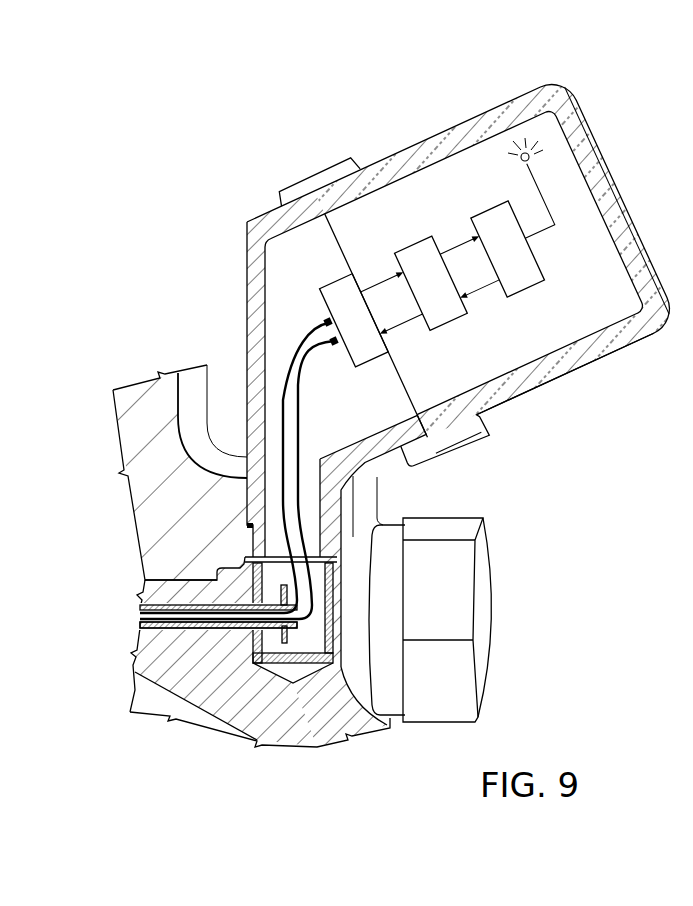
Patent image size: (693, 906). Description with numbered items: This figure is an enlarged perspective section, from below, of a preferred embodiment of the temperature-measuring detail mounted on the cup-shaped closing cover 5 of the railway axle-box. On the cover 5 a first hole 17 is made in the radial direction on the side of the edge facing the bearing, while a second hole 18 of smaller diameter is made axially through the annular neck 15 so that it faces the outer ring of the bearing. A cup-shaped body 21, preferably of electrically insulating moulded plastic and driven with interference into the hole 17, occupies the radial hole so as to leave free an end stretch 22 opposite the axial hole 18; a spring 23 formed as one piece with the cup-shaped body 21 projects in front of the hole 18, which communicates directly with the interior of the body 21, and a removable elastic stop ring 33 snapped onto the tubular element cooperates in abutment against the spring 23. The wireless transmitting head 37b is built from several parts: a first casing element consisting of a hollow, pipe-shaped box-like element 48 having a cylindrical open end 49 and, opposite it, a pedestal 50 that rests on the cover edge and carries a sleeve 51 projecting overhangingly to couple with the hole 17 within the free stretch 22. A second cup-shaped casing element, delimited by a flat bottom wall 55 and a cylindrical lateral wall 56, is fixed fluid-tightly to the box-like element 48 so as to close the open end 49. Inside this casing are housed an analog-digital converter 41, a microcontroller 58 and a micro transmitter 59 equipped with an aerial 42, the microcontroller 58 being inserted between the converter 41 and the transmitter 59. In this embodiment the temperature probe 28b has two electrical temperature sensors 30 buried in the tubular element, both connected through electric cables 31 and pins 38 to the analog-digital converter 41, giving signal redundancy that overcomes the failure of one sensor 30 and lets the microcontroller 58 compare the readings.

The closing cover 5 is at (641, 351).
The wireless transmitting head 37b is at (603, 100).
The cylindrical open end 49 is at (304, 210).
The flat bottom wall 55 is at (618, 180).
The lateral wall 56 is at (598, 349).
The analog-digital converter 41 is at (328, 283).
The microcontroller 58 is at (408, 250).
The micro transmitter 59 is at (486, 213).
The aerial 42 is at (549, 198).
The pin 38 is at (324, 320).
The electric cable 31 is at (293, 343).
The box-like element 48 is at (240, 320).
The pedestal 50 is at (335, 500).
The sleeve 51 is at (245, 548).
The electrical temperature sensor 30 is at (156, 611).
The temperature probe 28b is at (199, 642).
The second hole 18 is at (142, 625).
The annular neck 15 is at (155, 662).
The first hole 17 is at (312, 688).
The elastic stop ring 33 is at (285, 684).
The spring 23 is at (340, 741).
The end stretch 22 is at (330, 562).
The cup-shaped body 21 is at (330, 625).